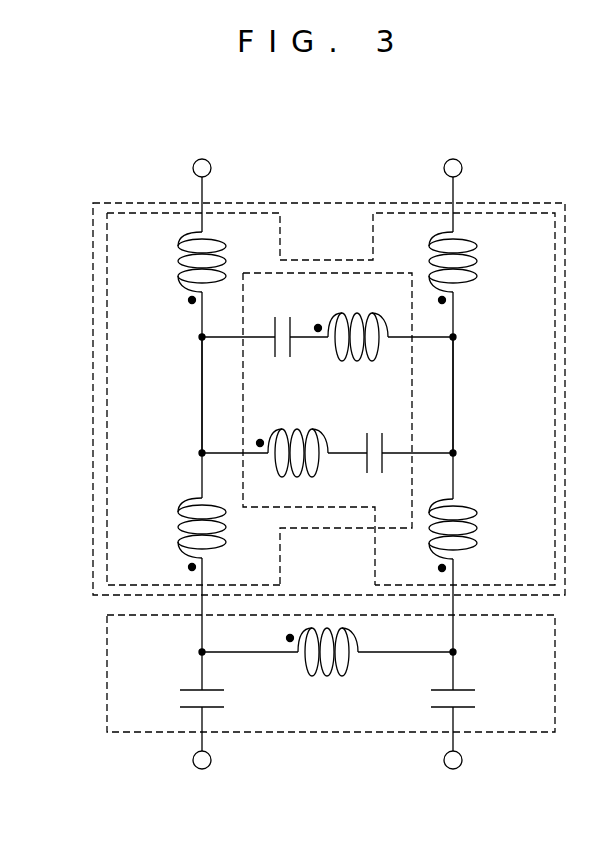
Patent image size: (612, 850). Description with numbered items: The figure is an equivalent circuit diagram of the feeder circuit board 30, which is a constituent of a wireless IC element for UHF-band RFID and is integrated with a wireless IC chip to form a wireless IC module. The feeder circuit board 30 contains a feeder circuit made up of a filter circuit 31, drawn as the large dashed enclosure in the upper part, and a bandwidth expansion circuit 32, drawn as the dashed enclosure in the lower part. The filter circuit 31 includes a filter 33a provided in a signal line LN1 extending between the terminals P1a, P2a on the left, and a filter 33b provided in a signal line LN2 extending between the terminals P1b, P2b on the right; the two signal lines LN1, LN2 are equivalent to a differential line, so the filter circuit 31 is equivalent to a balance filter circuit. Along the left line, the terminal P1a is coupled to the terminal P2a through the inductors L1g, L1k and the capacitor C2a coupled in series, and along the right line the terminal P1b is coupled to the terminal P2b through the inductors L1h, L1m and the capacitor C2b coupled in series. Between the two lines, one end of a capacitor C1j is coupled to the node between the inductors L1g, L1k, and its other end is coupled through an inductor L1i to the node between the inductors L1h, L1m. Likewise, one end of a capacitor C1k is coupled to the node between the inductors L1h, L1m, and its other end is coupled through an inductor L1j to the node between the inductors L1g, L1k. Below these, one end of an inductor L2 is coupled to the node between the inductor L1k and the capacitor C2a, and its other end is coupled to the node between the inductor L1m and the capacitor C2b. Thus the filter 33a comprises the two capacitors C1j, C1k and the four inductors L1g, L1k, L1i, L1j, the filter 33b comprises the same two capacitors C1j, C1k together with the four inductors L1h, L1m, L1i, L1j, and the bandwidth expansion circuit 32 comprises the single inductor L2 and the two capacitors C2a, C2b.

The feeder circuit board 30 is at (100, 179).
The filter circuit 31 is at (328, 203).
The bandwidth expansion circuit 32 is at (107, 675).
The filter 33a is at (190, 404).
The filter 33b is at (466, 405).
The signal line LN1 is at (202, 356).
The signal line LN2 is at (453, 357).
The terminal P1a is at (204, 175).
The terminal P1b is at (456, 175).
The terminal P2a is at (207, 779).
The terminal P2b is at (456, 779).
The inductor L1g is at (174, 268).
The inductor L1h is at (481, 268).
The inductor L1i is at (384, 324).
The inductor L1j is at (265, 437).
The inductor L1k is at (174, 594).
The inductor L1m is at (485, 594).
The capacitor C1j is at (265, 322).
The capacitor C1k is at (390, 435).
The inductor L2 is at (327, 671).
The capacitor C2a is at (179, 720).
The capacitor C2b is at (482, 720).